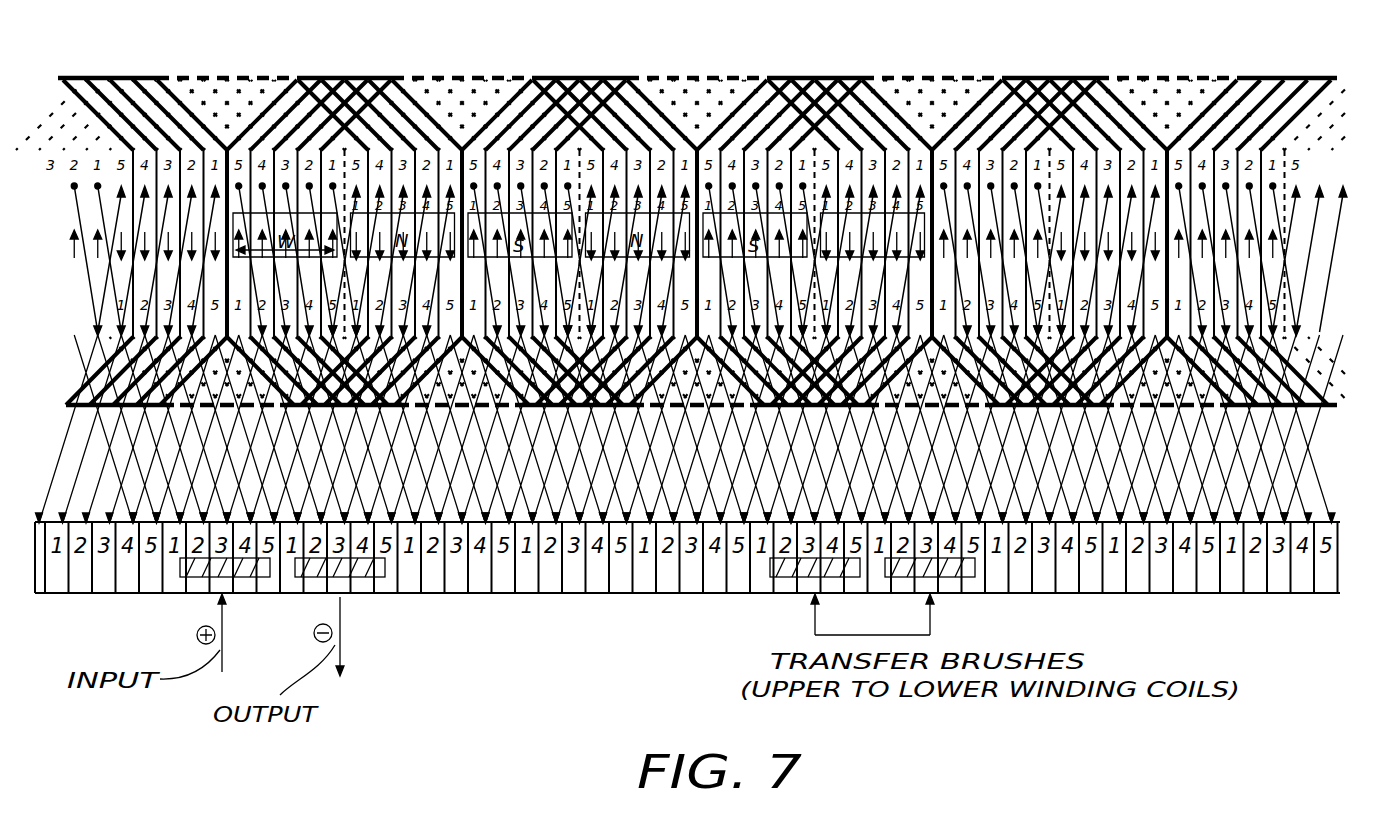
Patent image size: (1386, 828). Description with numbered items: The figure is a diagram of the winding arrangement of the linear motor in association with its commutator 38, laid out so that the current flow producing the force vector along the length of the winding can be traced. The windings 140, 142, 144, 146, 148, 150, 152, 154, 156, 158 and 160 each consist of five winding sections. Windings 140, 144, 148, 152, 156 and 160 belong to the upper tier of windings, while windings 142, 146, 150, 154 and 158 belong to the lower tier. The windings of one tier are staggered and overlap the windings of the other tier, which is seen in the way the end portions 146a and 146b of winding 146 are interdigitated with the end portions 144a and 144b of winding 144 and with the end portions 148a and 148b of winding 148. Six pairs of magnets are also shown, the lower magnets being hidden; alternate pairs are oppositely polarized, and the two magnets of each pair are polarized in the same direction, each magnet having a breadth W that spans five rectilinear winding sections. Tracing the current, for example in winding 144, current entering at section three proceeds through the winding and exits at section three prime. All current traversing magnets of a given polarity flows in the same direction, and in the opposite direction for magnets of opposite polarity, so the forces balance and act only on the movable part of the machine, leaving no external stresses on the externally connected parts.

The commutator 38 is at (412, 576).
The winding 140 is at (128, 78).
The winding 142 is at (234, 78).
The winding 144 is at (385, 78).
The end portion of winding 144 144a is at (310, 78).
The end portion of winding 144 144b is at (332, 405).
The winding 146 is at (455, 78).
The end portion of winding 146 146a is at (510, 78).
The end portion of winding 146 146b is at (462, 405).
The winding 148 is at (588, 78).
The end portion of winding 148 148a is at (580, 78).
The end portion of winding 148 148b is at (592, 405).
The winding 150 is at (690, 78).
The winding 152 is at (800, 78).
The winding 154 is at (937, 78).
The winding 156 is at (1047, 78).
The winding 158 is at (1157, 78).
The winding 160 is at (1265, 78).